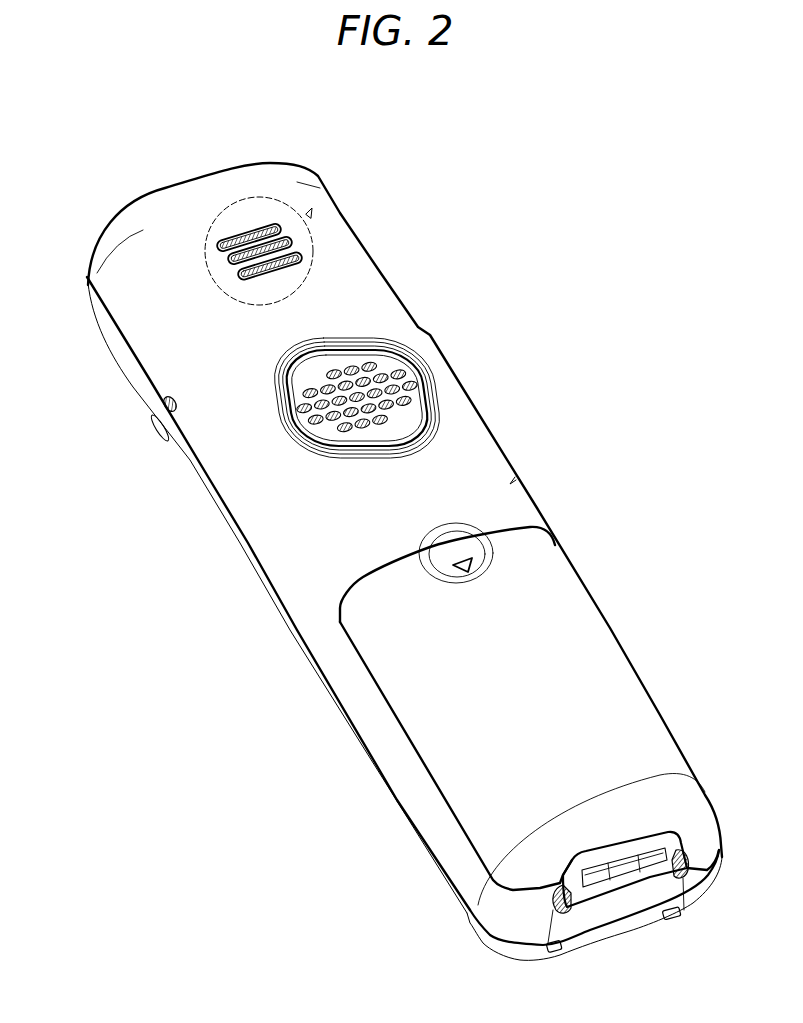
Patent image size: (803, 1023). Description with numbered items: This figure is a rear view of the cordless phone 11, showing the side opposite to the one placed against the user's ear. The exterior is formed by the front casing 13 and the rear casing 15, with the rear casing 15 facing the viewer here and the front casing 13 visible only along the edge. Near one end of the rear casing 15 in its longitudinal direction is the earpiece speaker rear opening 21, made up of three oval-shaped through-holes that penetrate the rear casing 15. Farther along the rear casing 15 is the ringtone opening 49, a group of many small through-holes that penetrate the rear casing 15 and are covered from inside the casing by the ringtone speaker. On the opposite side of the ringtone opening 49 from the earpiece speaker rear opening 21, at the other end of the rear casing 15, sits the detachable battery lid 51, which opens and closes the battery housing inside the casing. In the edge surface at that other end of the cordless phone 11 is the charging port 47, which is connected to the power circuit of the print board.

The cordless phone 11 is at (172, 144).
The front casing 13 is at (140, 387).
The rear casing 15 is at (373, 287).
The earpiece speaker rear opening 21 is at (253, 226).
The charging port 47 is at (623, 887).
The ringtone opening 49 is at (377, 362).
The battery lid 51 is at (620, 683).